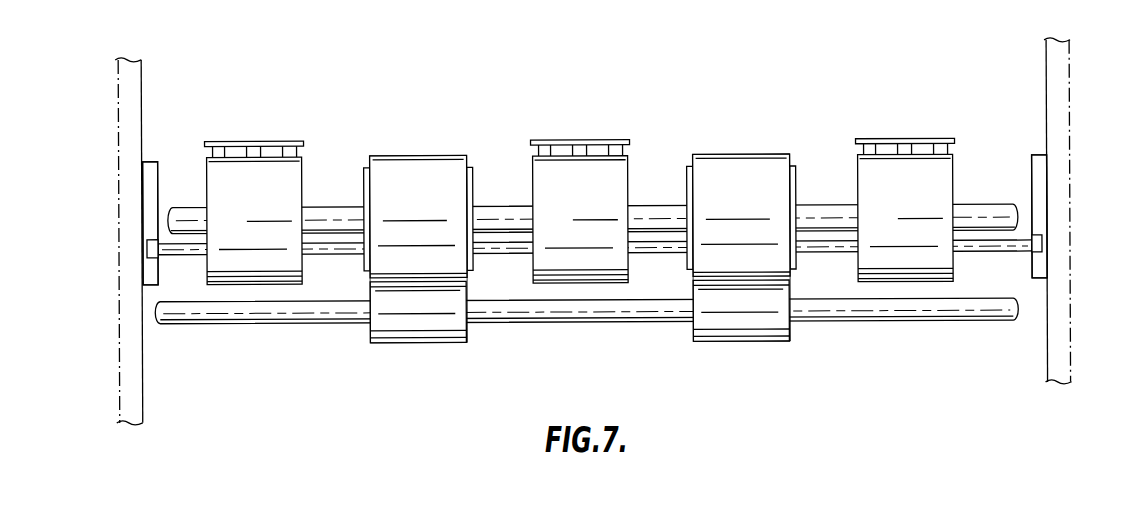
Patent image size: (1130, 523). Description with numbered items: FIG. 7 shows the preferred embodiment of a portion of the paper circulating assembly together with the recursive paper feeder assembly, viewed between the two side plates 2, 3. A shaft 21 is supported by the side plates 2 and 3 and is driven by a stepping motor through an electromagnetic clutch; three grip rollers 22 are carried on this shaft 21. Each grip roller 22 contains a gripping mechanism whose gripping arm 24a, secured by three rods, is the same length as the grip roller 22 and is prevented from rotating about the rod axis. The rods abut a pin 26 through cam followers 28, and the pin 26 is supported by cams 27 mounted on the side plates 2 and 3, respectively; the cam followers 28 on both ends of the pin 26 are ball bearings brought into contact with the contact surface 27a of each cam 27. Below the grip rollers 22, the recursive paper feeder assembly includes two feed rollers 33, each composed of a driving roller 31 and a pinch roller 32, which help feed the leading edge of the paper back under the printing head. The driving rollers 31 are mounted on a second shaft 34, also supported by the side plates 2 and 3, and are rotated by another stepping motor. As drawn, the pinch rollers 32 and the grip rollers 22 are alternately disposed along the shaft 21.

The side plate 2 is at (120, 291).
The side plate 3 is at (1072, 170).
The shaft 21 is at (985, 210).
The grip roller 22 is at (210, 171).
The gripping arm 24a is at (278, 140).
The pin 26 is at (985, 253).
The cam 27 is at (163, 175).
The contact surface 27a is at (148, 194).
The cam follower 28 is at (147, 251).
The driving roller 31 is at (417, 328).
The pinch roller 32 is at (423, 155).
The feed roller 33 is at (470, 326).
The shaft 34 is at (290, 319).